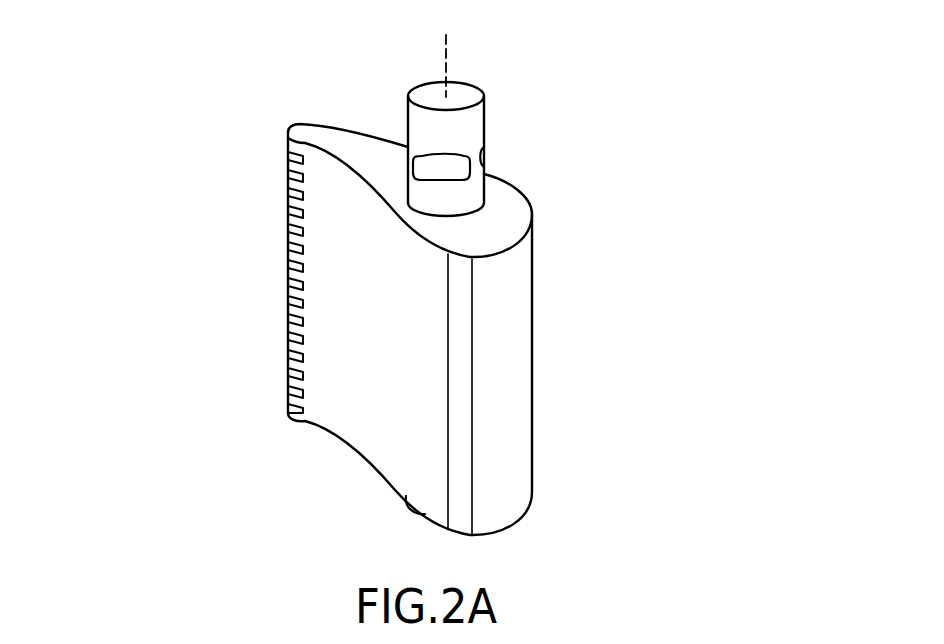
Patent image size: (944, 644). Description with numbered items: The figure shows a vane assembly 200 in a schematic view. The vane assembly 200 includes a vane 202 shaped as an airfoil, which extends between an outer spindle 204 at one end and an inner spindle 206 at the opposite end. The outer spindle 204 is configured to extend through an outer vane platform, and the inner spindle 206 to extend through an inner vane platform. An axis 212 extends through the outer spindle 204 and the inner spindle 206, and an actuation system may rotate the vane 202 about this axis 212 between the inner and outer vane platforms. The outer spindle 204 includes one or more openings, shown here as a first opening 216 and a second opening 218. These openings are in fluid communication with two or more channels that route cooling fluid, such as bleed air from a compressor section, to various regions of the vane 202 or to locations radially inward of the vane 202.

The vane assembly 200 is at (128, 169).
The vane 202 is at (532, 400).
The outer spindle 204 is at (486, 117).
The inner spindle 206 is at (407, 502).
The axis 212 is at (445, 53).
The first opening 216 is at (430, 165).
The second opening 218 is at (487, 157).